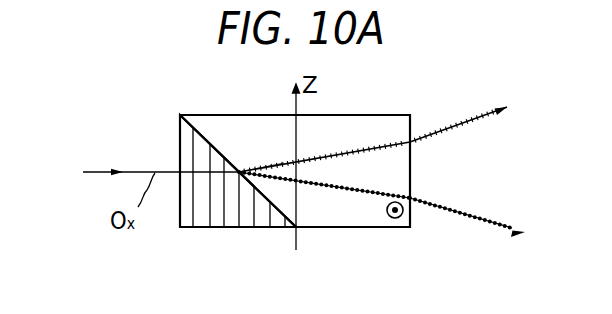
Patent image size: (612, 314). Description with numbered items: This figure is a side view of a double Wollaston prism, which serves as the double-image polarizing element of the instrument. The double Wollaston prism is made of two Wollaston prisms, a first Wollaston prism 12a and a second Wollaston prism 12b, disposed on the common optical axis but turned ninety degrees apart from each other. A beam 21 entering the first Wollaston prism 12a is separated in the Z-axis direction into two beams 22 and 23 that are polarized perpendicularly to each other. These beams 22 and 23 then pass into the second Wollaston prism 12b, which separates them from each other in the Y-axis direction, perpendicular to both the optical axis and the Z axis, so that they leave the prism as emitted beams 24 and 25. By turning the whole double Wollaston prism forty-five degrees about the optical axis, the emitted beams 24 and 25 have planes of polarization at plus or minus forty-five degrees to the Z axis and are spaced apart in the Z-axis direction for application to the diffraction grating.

The incident beam 21 is at (95, 170).
The separated beam 22 is at (268, 204).
The separated beam 23 is at (284, 162).
The emitted beam 24 is at (466, 212).
The emitted beam 25 is at (471, 120).
The first Wollaston prism 12a is at (210, 228).
The second Wollaston prism 12b is at (358, 228).